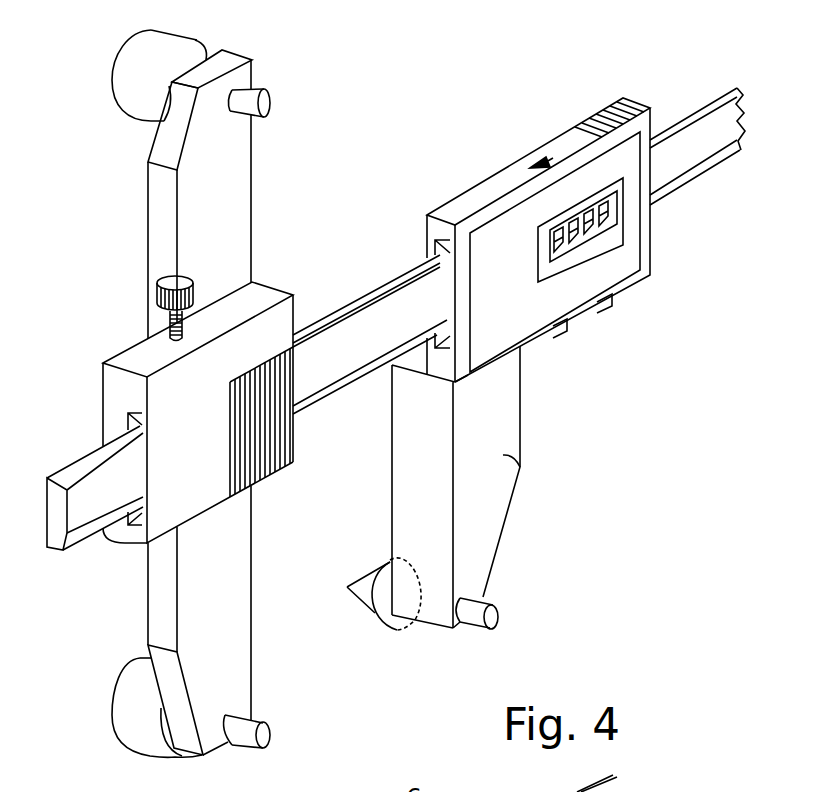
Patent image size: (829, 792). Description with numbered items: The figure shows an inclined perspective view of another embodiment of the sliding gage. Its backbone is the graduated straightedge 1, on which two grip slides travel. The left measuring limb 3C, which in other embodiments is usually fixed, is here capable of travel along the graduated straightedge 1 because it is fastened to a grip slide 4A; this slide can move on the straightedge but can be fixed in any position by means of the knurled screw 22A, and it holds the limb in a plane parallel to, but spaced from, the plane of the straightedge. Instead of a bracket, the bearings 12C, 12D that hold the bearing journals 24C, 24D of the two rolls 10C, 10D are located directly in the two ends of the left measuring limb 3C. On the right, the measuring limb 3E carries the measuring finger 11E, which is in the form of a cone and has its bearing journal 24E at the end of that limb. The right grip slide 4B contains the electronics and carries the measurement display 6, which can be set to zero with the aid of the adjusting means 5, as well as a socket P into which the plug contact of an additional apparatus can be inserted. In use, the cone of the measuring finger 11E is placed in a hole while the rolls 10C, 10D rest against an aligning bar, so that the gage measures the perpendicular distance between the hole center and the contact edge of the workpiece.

The graduated straightedge 1 is at (340, 337).
The left measuring limb 3C is at (138, 607).
The measuring limb 3E is at (520, 467).
The grip slide 4A is at (158, 402).
The grip slide 4B is at (484, 188).
The adjusting means 5 is at (562, 330).
The measurement display 6 is at (590, 204).
The socket P is at (540, 160).
The roll 10C is at (123, 717).
The roll 10D is at (139, 102).
The conical measuring finger 11E is at (388, 562).
The bearing 12C is at (228, 710).
The bearing 12D is at (222, 110).
The knurled screw 22A is at (172, 282).
The bearing journal 24C is at (266, 752).
The bearing journal 24D is at (272, 96).
The bearing journal 24E is at (498, 613).